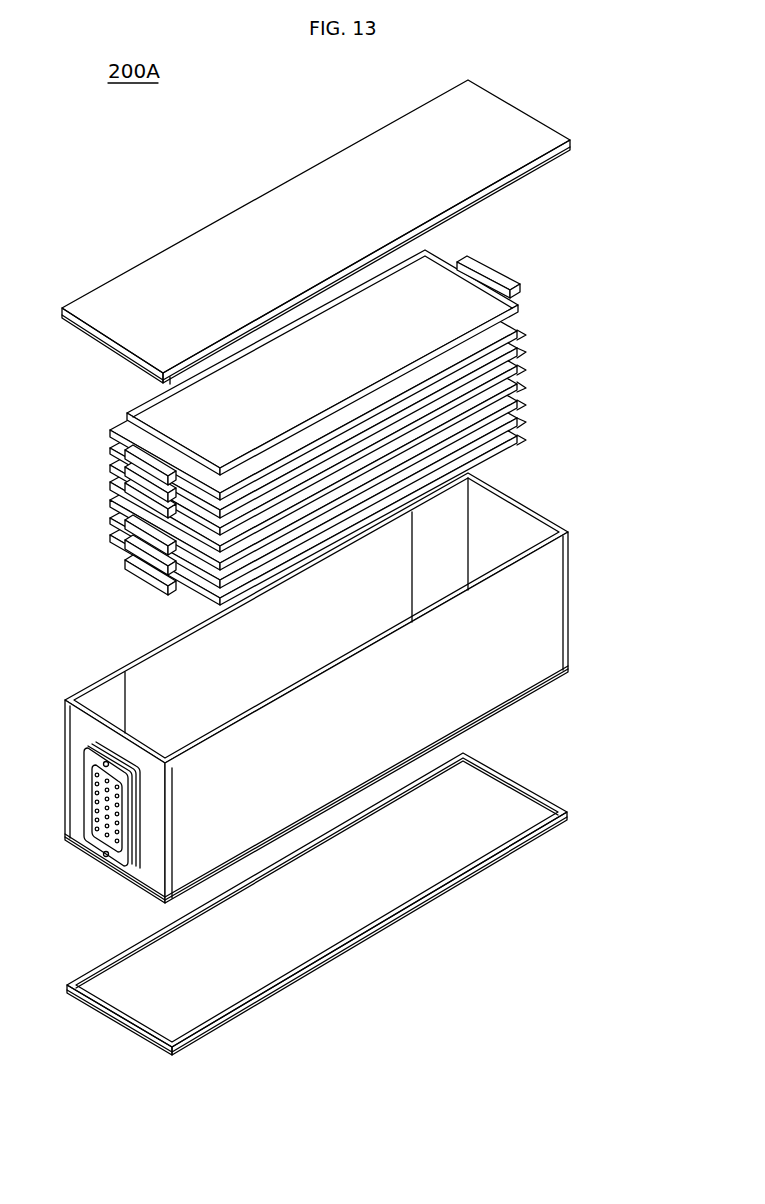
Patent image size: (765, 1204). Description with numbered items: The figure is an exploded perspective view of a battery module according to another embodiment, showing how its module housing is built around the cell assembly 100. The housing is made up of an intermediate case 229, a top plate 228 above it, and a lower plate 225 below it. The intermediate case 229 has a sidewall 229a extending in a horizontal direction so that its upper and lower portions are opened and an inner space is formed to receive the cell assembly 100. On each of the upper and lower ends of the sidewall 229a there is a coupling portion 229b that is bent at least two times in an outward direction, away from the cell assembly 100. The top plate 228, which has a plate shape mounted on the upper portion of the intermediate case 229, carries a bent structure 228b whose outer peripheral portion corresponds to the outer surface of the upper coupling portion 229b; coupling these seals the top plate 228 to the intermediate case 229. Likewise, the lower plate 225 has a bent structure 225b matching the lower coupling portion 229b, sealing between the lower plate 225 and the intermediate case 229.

The top plate 228 is at (323, 226).
The bent structure 228b is at (538, 173).
The cell assembly 100 is at (532, 305).
The intermediate case 229 is at (348, 703).
The coupling portion 229b is at (547, 542).
The sidewall 229a is at (328, 757).
The lower plate 225 is at (332, 904).
The bent structure 225b is at (543, 790).